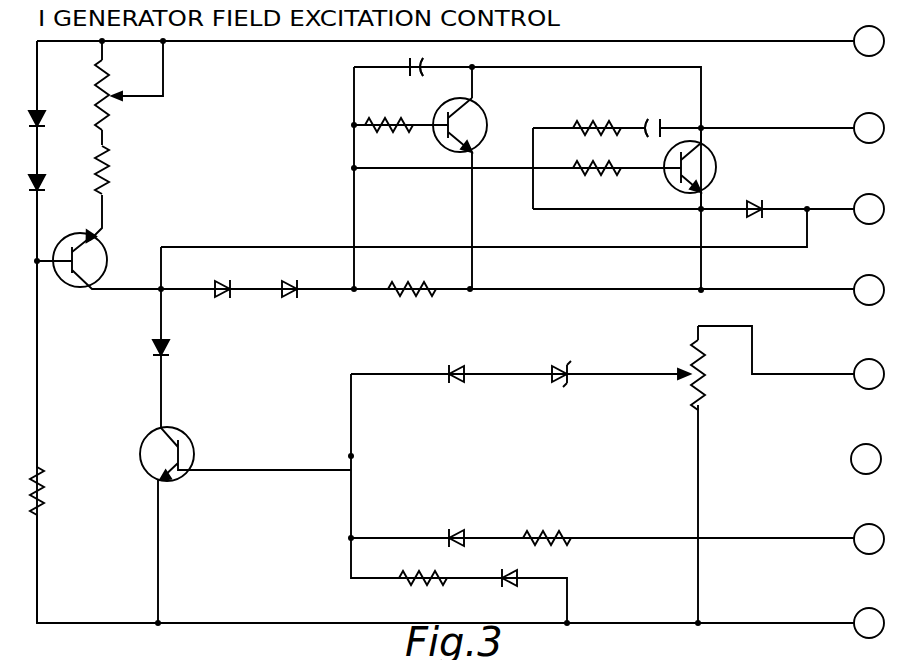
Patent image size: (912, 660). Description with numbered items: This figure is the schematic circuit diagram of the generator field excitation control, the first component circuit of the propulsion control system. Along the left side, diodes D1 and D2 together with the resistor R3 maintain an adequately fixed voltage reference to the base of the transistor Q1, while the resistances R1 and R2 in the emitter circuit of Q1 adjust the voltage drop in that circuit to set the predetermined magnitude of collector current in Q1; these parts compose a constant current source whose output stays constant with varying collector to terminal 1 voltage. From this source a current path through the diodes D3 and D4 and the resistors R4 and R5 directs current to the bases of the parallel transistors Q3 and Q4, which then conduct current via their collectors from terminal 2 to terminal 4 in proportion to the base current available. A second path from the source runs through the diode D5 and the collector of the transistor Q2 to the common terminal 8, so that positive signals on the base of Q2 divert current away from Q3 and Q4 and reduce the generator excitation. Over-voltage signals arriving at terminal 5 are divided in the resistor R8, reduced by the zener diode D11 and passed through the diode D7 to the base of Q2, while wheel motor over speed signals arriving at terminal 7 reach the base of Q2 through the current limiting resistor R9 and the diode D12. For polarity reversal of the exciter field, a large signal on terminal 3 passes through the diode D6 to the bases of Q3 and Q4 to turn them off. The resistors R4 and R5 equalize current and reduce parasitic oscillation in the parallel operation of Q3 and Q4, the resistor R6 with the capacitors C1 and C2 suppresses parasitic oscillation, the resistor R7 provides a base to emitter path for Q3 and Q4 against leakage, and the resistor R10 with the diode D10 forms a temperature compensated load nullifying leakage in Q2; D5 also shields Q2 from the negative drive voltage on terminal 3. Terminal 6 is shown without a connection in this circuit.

The resistance R1 is at (115, 96).
The resistance R2 is at (115, 170).
The resistor R3 is at (49, 491).
The current equalizing resistor R4 is at (389, 136).
The current equalizing resistor R5 is at (597, 179).
The resistor R6 is at (597, 117).
The resistor R7 is at (412, 299).
The resistor R8 is at (712, 375).
The current limiting resistor R9 is at (547, 526).
The resistor R10 is at (423, 590).
The diode D1 is at (53, 120).
The diode D2 is at (53, 184).
The diode D3 is at (225, 277).
The diode D4 is at (290, 277).
The diode D5 is at (177, 349).
The diode D6 is at (757, 221).
The diode D7 is at (456, 364).
The diode D10 is at (530, 589).
The zener diode D11 is at (552, 365).
The diode D12 is at (458, 527).
The capacitor C1 is at (410, 81).
The capacitor C2 is at (667, 118).
The transistor Q1 is at (80, 274).
The transistor Q2 is at (177, 465).
The transistor Q3 is at (475, 125).
The transistor Q4 is at (705, 167).
The terminal 1 is at (869, 41).
The terminal 2 is at (869, 128).
The terminal 3 is at (869, 209).
The terminal 4 is at (869, 290).
The terminal 5 is at (869, 374).
The terminal 6 is at (866, 459).
The terminal 7 is at (869, 539).
The common terminal 8 is at (869, 623).